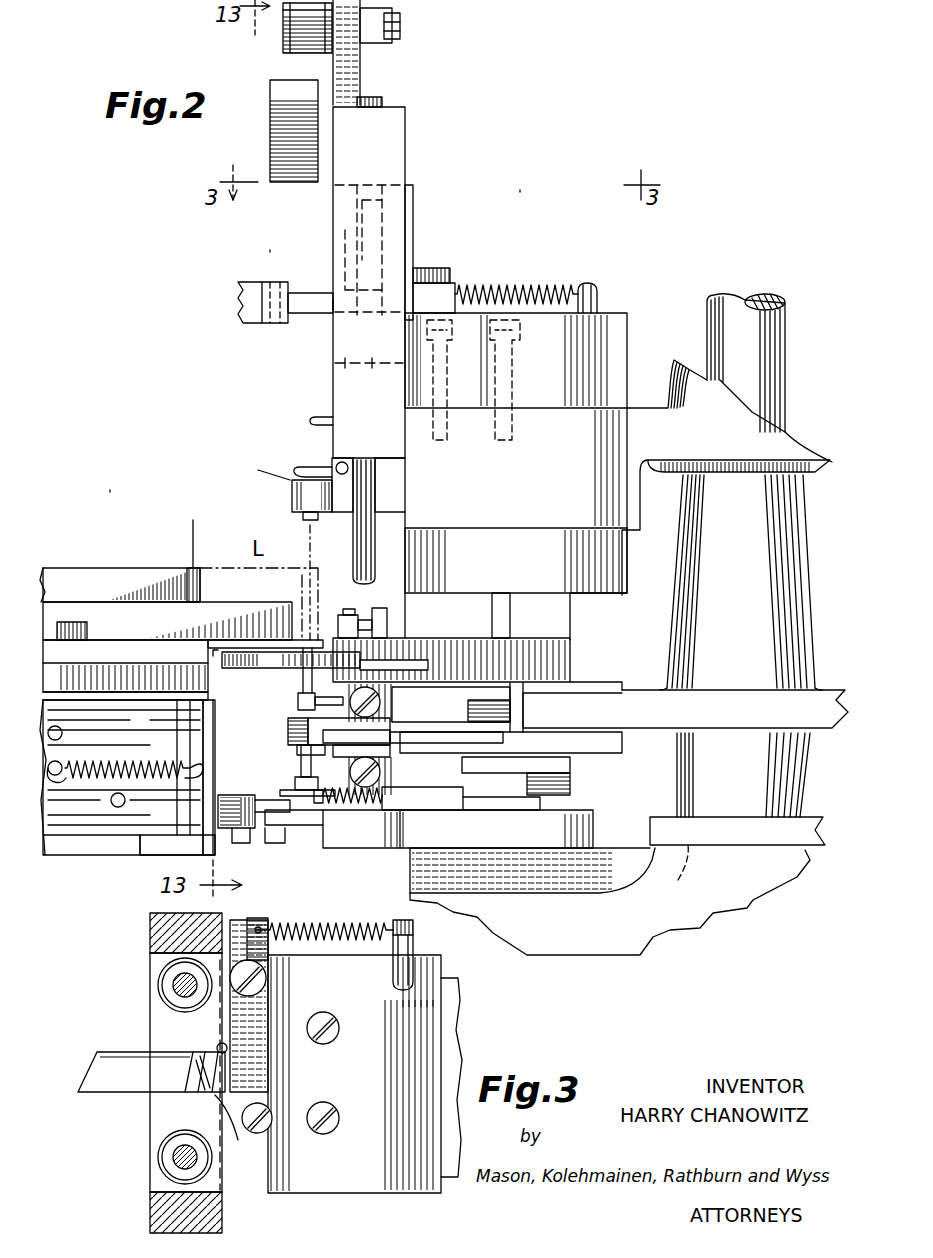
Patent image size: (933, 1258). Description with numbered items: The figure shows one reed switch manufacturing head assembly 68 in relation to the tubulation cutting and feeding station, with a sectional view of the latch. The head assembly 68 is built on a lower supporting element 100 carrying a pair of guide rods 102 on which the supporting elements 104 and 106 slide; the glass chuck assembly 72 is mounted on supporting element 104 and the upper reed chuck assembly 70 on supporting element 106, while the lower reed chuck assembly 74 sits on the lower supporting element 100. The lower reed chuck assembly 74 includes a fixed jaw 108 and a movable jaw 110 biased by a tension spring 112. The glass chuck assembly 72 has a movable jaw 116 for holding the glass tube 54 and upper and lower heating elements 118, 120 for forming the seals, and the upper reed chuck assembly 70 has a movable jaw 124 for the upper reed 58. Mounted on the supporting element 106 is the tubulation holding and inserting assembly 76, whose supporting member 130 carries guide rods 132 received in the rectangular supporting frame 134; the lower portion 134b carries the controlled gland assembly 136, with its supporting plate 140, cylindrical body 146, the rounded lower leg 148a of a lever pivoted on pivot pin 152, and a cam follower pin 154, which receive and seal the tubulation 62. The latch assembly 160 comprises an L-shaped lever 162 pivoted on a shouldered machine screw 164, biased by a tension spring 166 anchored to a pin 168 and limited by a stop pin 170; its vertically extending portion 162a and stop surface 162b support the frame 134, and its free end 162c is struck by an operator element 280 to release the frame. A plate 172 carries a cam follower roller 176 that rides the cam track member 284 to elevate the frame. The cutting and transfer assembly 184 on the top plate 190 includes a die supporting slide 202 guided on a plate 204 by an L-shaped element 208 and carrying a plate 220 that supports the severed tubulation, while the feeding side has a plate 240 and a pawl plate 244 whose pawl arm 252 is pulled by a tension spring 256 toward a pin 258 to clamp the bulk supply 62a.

In FIG. 2, the glass housing or tube 54 is at (301, 768).
In FIG. 2, the second magnetic reed or contact element 58 is at (303, 682).
In FIG. 2, the tubulation 62 is at (193, 528).
In FIG. 2, the bulk supply of tubulation 62a is at (185, 846).
In FIG. 2, the reed switch manufacturing head assembly 68 is at (540, 180).
In FIG. 2, the upper reed chuck assembly 70 is at (396, 606).
In FIG. 2, the glass chuck assembly 72 is at (612, 656).
In FIG. 2, the lower reed chuck assembly 74 is at (322, 874).
In FIG. 2, the tubulation holding and inserting assembly 76 is at (183, 256).
In FIG. 2, the lower supporting element 100 is at (648, 935).
In FIG. 2, the guide rods 102 is at (770, 304).
In FIG. 2, the supporting element 104 is at (640, 725).
In FIG. 2, the supporting element 106 is at (634, 407).
In FIG. 3, the supporting element 106 is at (460, 1030).
In FIG. 2, the fixed jaw 108 is at (352, 840).
In FIG. 2, the movable jaw 110 is at (228, 828).
In FIG. 2, the tension spring 112 is at (382, 792).
In FIG. 2, the movable jaw 116 is at (288, 728).
In FIG. 2, the upper heating element 118 is at (298, 703).
In FIG. 2, the lower heating element 120 is at (295, 780).
In FIG. 2, the movable jaw 124 is at (285, 672).
In FIG. 2, the supporting member 130 is at (627, 313).
In FIG. 3, the supporting member 130 is at (441, 978).
In FIG. 2, the guide rods 132 is at (382, 100).
In FIG. 3, the guide rods 132 is at (175, 982).
In FIG. 2, the supporting frame 134 is at (406, 148).
In FIG. 3, the supporting frame 134 is at (150, 930).
In FIG. 3, the lower portion of supporting frame 134b is at (215, 1135).
In FIG. 2, the controlled gland assembly 136 is at (282, 472).
In FIG. 2, the supporting plate 140 is at (303, 515).
In FIG. 2, the cylindrical body 146 is at (292, 494).
In FIG. 2, the lower leg of lever 148a is at (298, 467).
In FIG. 2, the pivot pin 152 is at (345, 461).
In FIG. 2, the cam follower pin 154 is at (312, 419).
In FIG. 2, the latch assembly 160 is at (239, 346).
In FIG. 3, the latch assembly 160 is at (92, 1014).
In FIG. 2, the L-shaped lever 162 is at (438, 293).
In FIG. 3, the L-shaped lever 162 is at (268, 1068).
In FIG. 2, the vertically extending portion 162a is at (413, 194).
In FIG. 3, the vertically extending portion 162a is at (220, 1110).
In FIG. 2, the step or stop surface 162b is at (370, 215).
In FIG. 3, the step or stop surface 162b is at (188, 1090).
In FIG. 2, the free end of lever 162c is at (304, 292).
In FIG. 3, the free end of lever 162c is at (103, 1085).
In FIG. 2, the shouldered machine screw 164 is at (432, 268).
In FIG. 3, the shouldered machine screw 164 is at (240, 960).
In FIG. 2, the tension spring 166 is at (540, 272).
In FIG. 3, the tension spring 166 is at (314, 920).
In FIG. 2, the pin 168 is at (596, 287).
In FIG. 3, the pin 168 is at (414, 945).
In FIG. 3, the stop pin 170 is at (218, 1046).
In FIG. 2, the plate 172 is at (361, 70).
In FIG. 2, the cam follower roller 176 is at (283, 48).
In FIG. 2, the tubulation cutting and transfer assembly 184 is at (120, 481).
In FIG. 2, the top plate 190 is at (90, 672).
In FIG. 2, the die supporting slide 202 is at (84, 556).
In FIG. 2, the plate 204 is at (250, 638).
In FIG. 2, the L-shaped element 208 is at (90, 606).
In FIG. 2, the plate 220 is at (190, 574).
In FIG. 2, the plate 240 is at (88, 838).
In FIG. 2, the plate 244 is at (185, 724).
In FIG. 2, the pawl arm 252 is at (195, 816).
In FIG. 2, the tension spring 256 is at (108, 760).
In FIG. 2, the pin 258 is at (72, 784).
In FIG. 2, the operator element 280 is at (242, 303).
In FIG. 2, the cam track member 284 is at (270, 148).